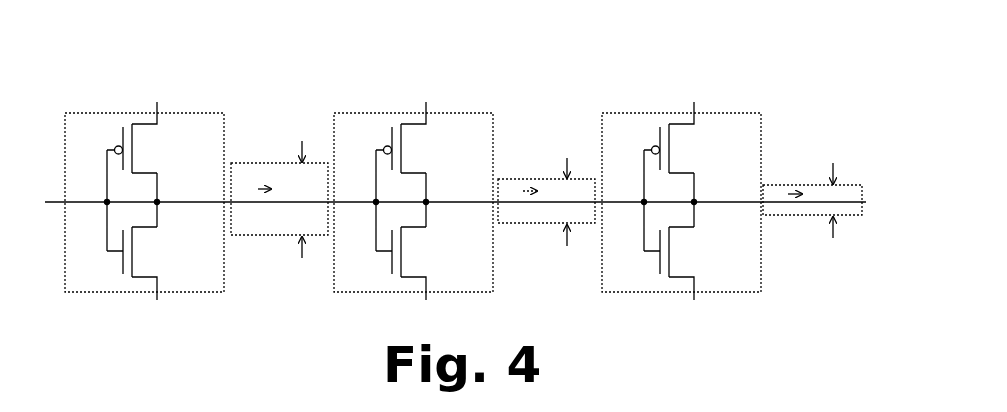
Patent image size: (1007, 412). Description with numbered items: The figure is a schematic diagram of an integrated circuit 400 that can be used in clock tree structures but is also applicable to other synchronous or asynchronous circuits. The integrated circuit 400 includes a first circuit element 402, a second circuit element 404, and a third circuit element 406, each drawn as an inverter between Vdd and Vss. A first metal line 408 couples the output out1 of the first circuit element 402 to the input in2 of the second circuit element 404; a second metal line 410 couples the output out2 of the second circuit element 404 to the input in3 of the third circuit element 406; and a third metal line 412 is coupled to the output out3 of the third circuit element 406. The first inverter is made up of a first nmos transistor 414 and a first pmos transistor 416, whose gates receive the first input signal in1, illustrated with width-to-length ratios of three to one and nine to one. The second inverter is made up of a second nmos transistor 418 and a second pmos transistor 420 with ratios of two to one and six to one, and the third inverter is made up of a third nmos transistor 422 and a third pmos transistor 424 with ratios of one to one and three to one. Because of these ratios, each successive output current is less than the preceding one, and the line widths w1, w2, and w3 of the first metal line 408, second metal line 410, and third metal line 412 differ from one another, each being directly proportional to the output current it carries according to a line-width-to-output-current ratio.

The integrated circuit 400 is at (103, 52).
The first circuit element 402 is at (102, 113).
The second circuit element 404 is at (406, 202).
The third circuit element 406 is at (674, 202).
The first metal line 408 is at (278, 163).
The second metal line 410 is at (544, 179).
The third metal line 412 is at (811, 185).
The first nmos transistor 414 is at (163, 236).
The first pmos transistor 416 is at (163, 135).
The second nmos transistor 418 is at (438, 248).
The second pmos transistor 420 is at (434, 146).
The third nmos transistor 422 is at (706, 248).
The third pmos transistor 424 is at (702, 146).